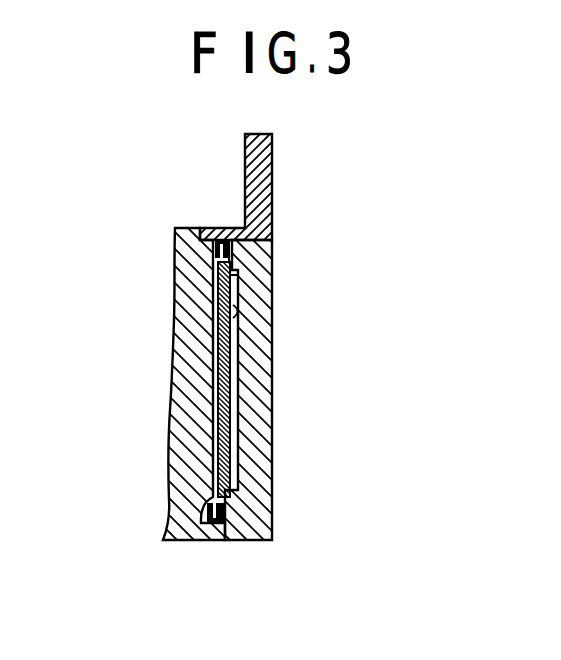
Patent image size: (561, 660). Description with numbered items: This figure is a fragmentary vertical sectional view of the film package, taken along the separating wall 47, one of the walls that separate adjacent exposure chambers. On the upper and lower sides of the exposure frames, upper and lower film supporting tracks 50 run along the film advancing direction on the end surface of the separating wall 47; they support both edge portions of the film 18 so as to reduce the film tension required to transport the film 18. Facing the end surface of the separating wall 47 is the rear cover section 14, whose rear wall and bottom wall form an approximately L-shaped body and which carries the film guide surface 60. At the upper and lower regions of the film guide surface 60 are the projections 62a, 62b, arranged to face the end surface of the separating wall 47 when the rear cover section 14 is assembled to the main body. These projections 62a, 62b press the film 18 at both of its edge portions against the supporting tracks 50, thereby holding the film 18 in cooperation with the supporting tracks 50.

The rear cover section 14 is at (273, 174).
The film 18 is at (230, 366).
The separating wall 47 is at (178, 377).
The film supporting tracks 50 is at (214, 237).
The film guide surface 60 is at (237, 318).
The projection 62a is at (232, 266).
The projection 62b is at (252, 505).